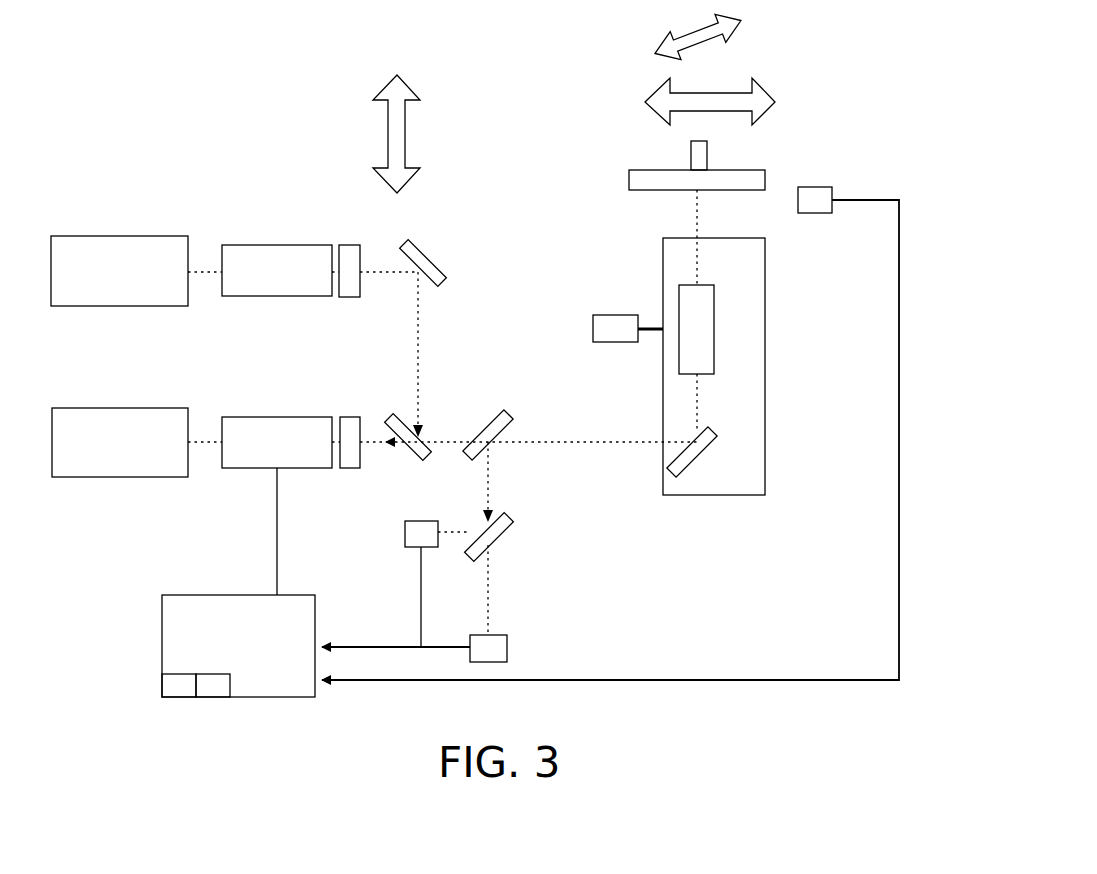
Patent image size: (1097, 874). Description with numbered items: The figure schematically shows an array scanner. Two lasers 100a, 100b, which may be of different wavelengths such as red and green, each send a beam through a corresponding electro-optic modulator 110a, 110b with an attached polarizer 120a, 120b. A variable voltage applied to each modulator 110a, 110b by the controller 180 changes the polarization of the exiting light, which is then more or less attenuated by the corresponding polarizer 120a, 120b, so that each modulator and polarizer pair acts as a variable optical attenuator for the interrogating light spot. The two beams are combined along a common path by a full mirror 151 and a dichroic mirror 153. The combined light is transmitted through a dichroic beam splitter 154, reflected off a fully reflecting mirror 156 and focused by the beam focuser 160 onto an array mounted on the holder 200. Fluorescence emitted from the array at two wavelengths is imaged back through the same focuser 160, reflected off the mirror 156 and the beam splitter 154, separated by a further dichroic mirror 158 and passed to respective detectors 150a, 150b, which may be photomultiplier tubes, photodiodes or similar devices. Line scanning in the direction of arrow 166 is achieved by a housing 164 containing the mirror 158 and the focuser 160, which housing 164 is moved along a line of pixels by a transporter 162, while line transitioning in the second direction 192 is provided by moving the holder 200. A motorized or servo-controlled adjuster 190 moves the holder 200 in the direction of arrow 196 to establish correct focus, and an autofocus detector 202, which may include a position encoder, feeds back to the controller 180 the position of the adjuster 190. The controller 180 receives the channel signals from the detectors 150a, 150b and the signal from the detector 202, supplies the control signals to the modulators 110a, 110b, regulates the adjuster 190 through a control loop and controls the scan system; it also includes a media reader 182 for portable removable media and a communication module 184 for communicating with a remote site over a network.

The laser 100a is at (90, 408).
The laser 100b is at (105, 236).
The electro-optic modulator 110a is at (253, 417).
The electro-optic modulator 110b is at (253, 245).
The polarizer 120a is at (352, 417).
The polarizer 120b is at (352, 245).
The full mirror 151 is at (433, 258).
The dichroic mirror 153 is at (430, 432).
The dichroic beam splitter 154 is at (503, 432).
The fully reflecting mirror 156 is at (690, 463).
The dichroic mirror 158 is at (505, 538).
The detector 150a is at (405, 530).
The detector 150b is at (507, 645).
The beam focuser 160 is at (716, 335).
The transporter 162 is at (593, 324).
The housing 164 is at (765, 375).
The arrow indicating scan direction 166 is at (708, 93).
The controller 180 is at (212, 595).
The media reader 182 is at (165, 688).
The communication module 184 is at (210, 692).
The servo-controlled adjuster 190 is at (707, 155).
The second direction of scanning 192 is at (670, 42).
The arrow indicating focus direction 196 is at (407, 118).
The holder 200 is at (629, 182).
The autofocus detector 202 is at (812, 213).